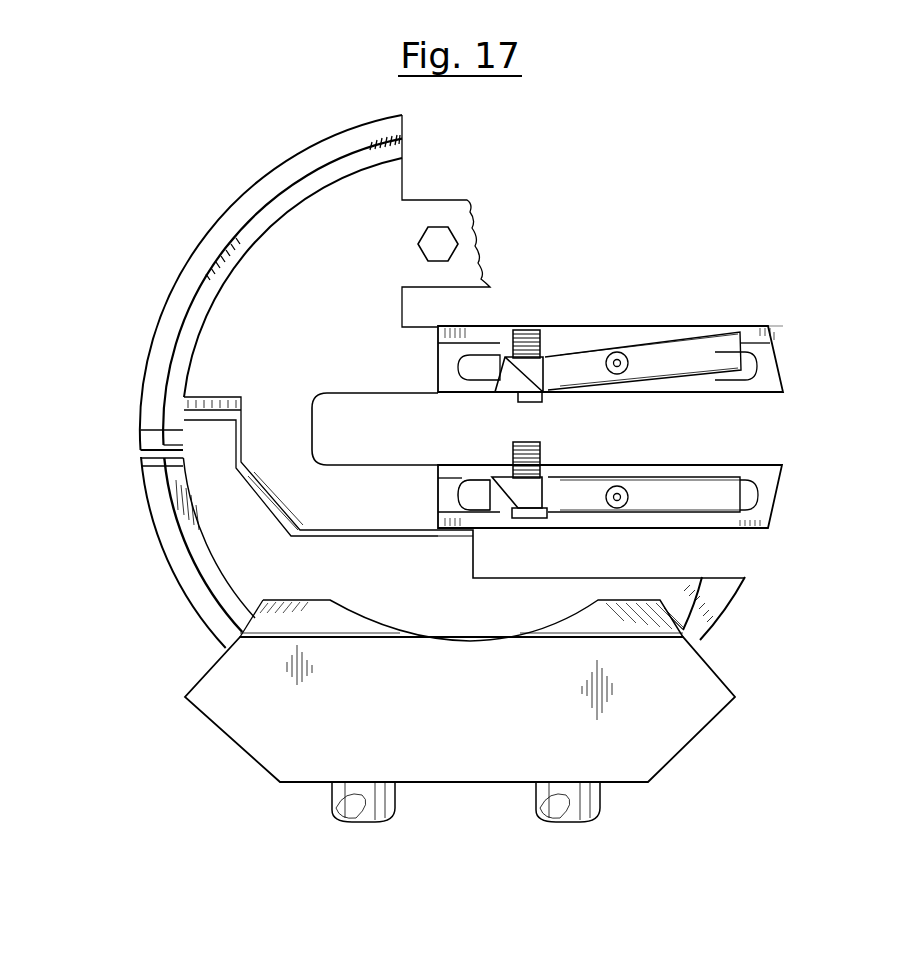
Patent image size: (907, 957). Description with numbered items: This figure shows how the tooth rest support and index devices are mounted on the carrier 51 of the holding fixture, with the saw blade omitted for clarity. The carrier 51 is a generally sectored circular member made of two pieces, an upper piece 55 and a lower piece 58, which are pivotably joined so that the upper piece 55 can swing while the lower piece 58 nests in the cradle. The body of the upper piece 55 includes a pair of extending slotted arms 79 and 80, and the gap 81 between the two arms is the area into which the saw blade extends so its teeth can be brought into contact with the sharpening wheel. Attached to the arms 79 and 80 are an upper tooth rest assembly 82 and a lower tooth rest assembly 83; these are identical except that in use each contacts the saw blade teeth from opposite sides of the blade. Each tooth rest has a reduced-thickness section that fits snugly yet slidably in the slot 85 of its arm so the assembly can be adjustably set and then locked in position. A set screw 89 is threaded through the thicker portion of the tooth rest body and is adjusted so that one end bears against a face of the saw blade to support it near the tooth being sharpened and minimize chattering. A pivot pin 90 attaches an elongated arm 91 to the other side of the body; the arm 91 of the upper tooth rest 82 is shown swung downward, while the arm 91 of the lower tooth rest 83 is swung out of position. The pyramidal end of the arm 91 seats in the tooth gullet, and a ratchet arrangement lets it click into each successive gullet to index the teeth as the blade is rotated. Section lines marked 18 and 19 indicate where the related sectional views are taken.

The carrier 51 is at (150, 331).
The upper piece 55 is at (243, 282).
The lower piece 58 is at (218, 522).
The slotted arm 79 is at (785, 378).
The slotted arm 80 is at (784, 489).
The gap 81 is at (790, 428).
The upper tooth rest assembly 82 is at (720, 340).
The lower tooth rest assembly 83 is at (712, 470).
The slot 85 is at (473, 490).
The set screw 89 is at (529, 330).
The pivot pin 90 is at (619, 358).
The elongated arm 91 is at (681, 343).
The section line 18 is at (544, 553).
The section line 19 is at (753, 430).